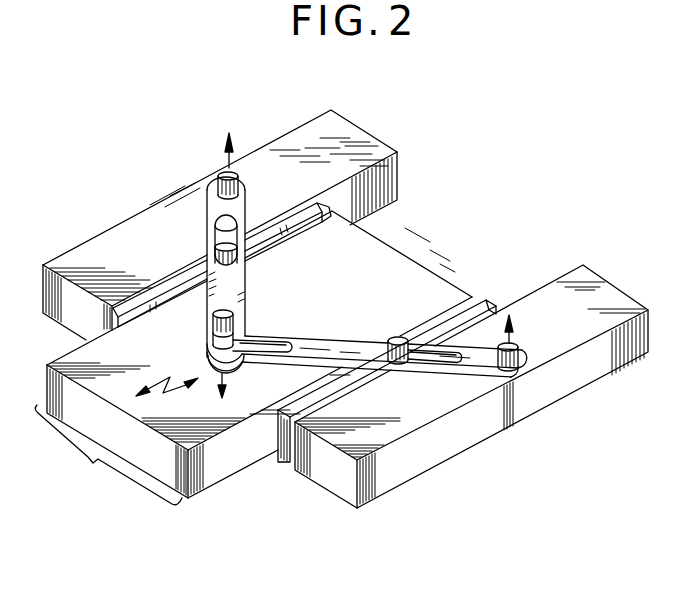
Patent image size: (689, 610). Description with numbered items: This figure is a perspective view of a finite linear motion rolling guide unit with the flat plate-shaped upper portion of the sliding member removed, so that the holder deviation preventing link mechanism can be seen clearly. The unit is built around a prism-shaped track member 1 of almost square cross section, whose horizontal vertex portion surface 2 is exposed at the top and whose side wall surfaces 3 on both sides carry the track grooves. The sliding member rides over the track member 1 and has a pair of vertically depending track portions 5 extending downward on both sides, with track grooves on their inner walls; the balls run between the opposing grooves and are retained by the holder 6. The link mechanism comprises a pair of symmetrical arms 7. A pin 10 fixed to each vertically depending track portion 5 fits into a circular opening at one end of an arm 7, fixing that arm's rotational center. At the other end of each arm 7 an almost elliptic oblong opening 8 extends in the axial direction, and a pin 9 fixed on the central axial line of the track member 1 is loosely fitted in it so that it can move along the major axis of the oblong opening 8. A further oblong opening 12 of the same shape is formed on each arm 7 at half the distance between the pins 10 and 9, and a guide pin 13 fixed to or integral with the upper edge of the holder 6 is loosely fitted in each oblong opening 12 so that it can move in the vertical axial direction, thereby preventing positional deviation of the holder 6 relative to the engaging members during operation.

The track member 1 is at (108, 455).
The horizontal vertex portion surface 2 is at (404, 262).
The side wall surfaces 3 is at (243, 460).
The vertically depending track portions 5 is at (352, 140).
The holder 6 is at (320, 204).
The arms 7 is at (233, 296).
The oblong opening 8 is at (265, 353).
The pin 9 is at (226, 328).
The pin 10 is at (221, 173).
The oblong opening 12 is at (236, 233).
The guide pin 13 is at (215, 246).